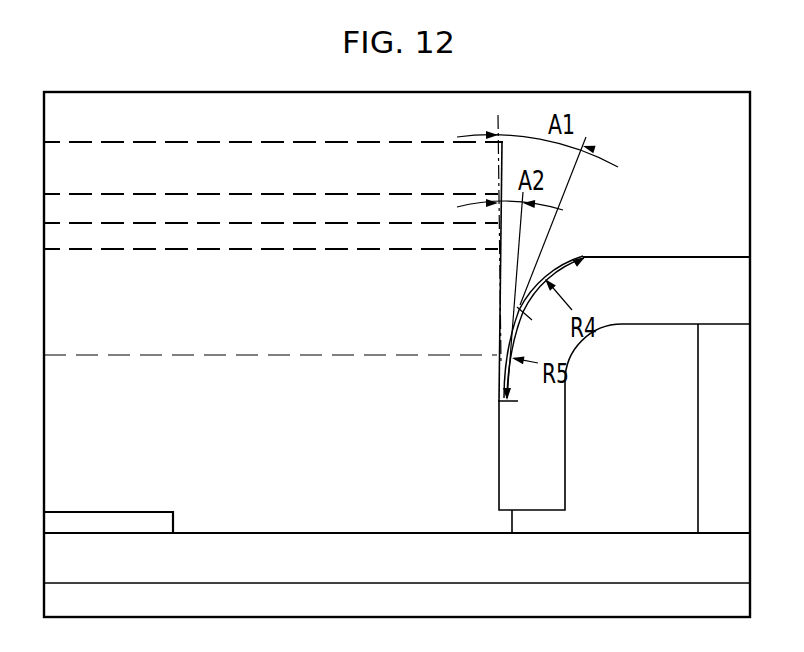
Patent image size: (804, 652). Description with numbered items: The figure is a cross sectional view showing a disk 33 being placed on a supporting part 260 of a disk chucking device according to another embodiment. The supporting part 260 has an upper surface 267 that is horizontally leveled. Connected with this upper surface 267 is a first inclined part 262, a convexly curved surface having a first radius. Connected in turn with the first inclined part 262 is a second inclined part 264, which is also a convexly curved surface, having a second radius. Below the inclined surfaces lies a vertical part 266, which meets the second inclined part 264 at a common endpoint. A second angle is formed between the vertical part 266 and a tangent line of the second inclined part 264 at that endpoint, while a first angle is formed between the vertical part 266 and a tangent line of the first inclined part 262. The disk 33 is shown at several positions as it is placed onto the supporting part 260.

The disk 33 is at (110, 332).
The supporting part 260 is at (606, 391).
The first inclined part 262 is at (528, 291).
The second inclined part 264 is at (500, 358).
The vertical part 266 is at (510, 481).
The upper surface 267 is at (657, 270).